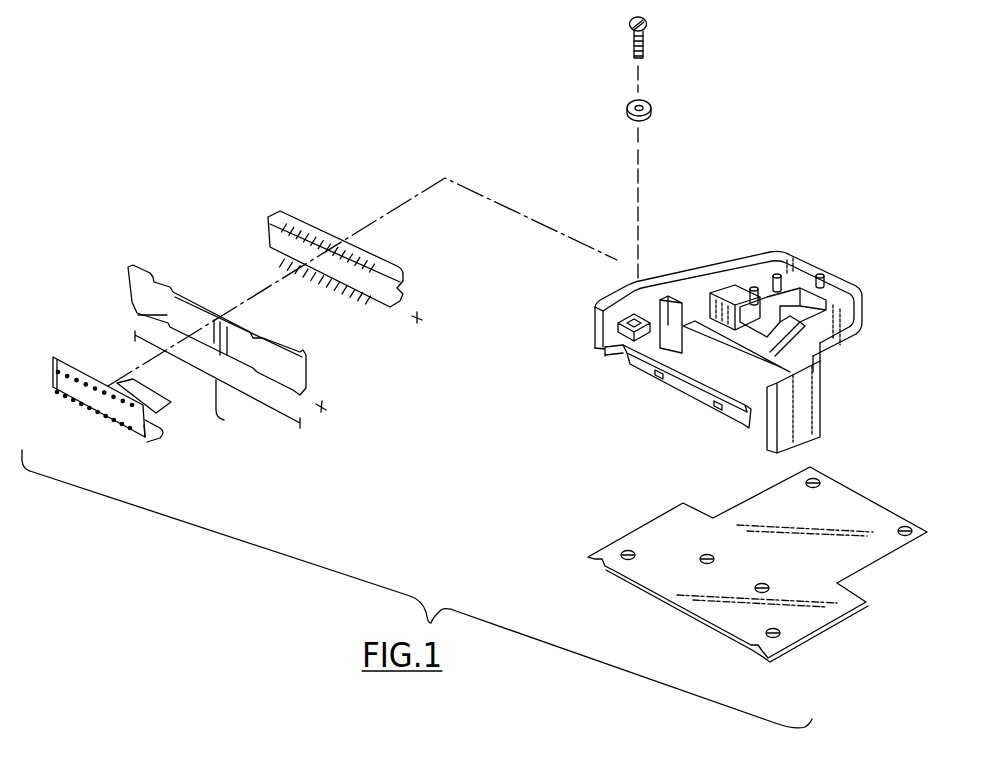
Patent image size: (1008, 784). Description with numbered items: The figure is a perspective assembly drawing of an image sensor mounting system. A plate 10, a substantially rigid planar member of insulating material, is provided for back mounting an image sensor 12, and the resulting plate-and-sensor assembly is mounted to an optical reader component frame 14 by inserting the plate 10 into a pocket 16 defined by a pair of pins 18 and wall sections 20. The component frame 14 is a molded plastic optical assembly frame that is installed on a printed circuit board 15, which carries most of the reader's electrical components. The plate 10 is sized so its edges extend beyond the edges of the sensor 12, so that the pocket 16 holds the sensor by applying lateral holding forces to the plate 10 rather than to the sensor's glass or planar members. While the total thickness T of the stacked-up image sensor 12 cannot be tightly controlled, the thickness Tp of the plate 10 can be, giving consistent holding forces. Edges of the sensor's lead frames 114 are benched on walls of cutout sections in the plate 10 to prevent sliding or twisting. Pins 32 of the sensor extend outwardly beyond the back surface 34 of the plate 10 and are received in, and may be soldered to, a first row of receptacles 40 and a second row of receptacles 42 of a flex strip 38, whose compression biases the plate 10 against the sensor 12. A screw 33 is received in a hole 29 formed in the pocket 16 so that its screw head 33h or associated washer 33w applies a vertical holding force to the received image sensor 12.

The plate 10 is at (234, 338).
The image sensor 12 is at (343, 286).
The optical reader component frame 14 is at (718, 340).
The circuit board 15 is at (820, 617).
The pocket 16 is at (652, 302).
The pins 18 is at (630, 316).
The wall sections 20 is at (677, 327).
The hole 29 is at (636, 313).
The pins 32 is at (305, 244).
The screw 33 is at (670, 141).
The screw head 33h is at (647, 19).
The washer 33w is at (651, 110).
The back surface 34 is at (152, 303).
The flex strip 38 is at (164, 435).
The first row of receptacles 40 is at (131, 403).
The second row of receptacles 42 is at (143, 433).
The lead frames 114 is at (380, 279).
The total thickness of image sensor T is at (418, 320).
The thickness of plate Tp is at (326, 415).